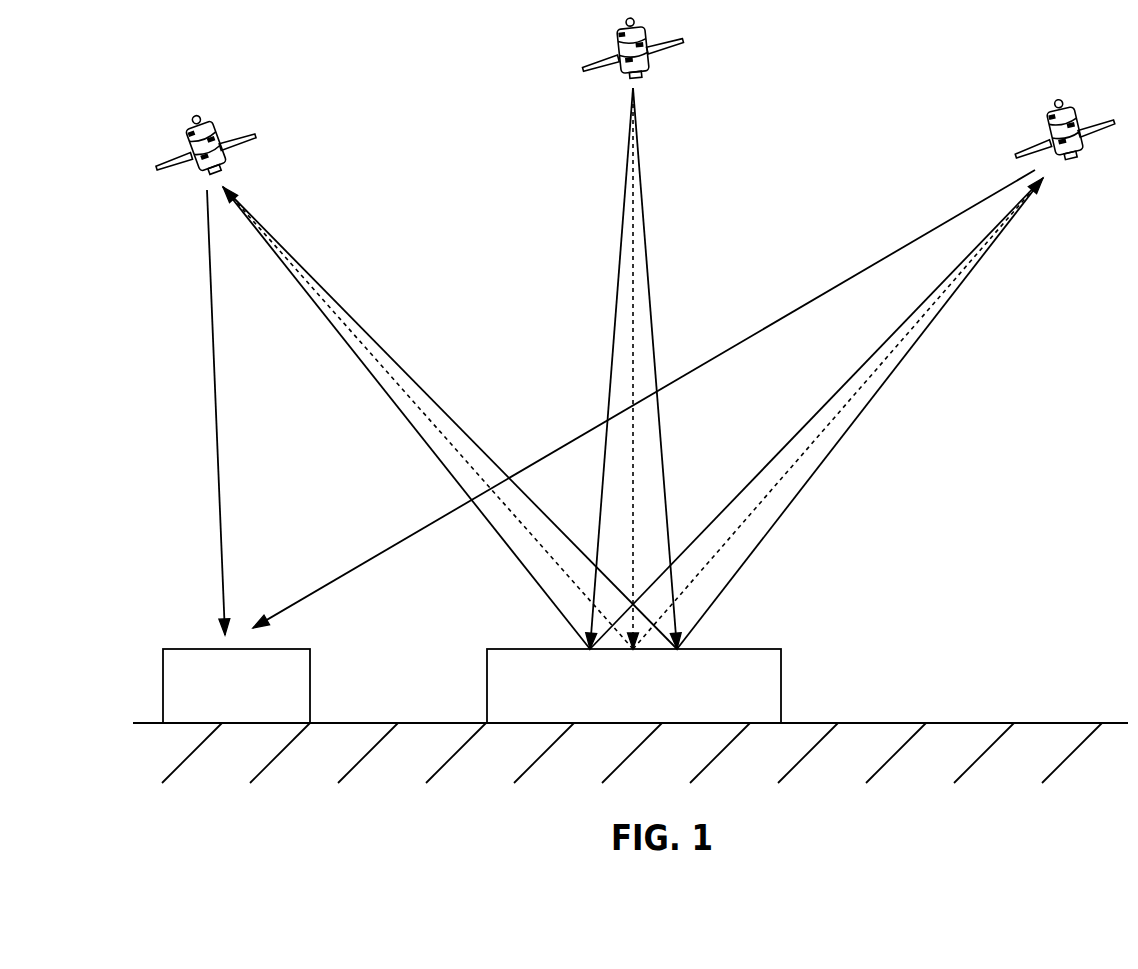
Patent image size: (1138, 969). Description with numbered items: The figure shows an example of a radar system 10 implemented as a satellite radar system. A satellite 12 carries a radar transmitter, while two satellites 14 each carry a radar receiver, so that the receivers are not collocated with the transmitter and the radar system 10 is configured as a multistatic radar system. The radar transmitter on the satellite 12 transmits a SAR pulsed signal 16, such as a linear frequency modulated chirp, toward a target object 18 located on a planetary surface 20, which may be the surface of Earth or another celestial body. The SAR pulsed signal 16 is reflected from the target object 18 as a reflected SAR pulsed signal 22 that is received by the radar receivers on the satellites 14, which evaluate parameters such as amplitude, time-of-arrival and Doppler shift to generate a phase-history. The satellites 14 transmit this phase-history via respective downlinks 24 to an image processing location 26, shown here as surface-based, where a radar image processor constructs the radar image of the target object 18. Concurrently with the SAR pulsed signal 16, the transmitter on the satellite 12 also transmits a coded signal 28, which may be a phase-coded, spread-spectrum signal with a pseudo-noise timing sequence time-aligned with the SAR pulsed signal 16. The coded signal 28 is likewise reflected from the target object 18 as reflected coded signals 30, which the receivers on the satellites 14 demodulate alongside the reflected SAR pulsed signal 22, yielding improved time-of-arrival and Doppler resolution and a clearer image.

The radar system 10 is at (205, 56).
The satellite 12 is at (586, 68).
The satellites 14 is at (253, 138).
The SAR pulsed signal 16 is at (615, 322).
The target object 18 is at (767, 649).
The planetary surface 20 is at (957, 723).
The reflected SAR pulsed signal 22 is at (380, 345).
The downlinks 24 is at (215, 380).
The image processing location 26 is at (310, 649).
The coded signal 28 is at (635, 472).
The reflected coded signals 30 is at (453, 447).